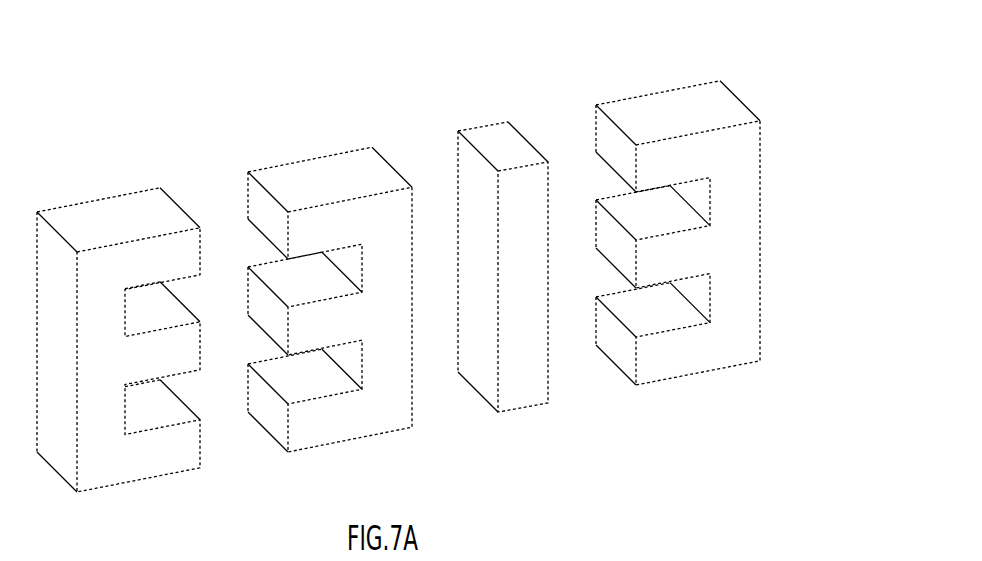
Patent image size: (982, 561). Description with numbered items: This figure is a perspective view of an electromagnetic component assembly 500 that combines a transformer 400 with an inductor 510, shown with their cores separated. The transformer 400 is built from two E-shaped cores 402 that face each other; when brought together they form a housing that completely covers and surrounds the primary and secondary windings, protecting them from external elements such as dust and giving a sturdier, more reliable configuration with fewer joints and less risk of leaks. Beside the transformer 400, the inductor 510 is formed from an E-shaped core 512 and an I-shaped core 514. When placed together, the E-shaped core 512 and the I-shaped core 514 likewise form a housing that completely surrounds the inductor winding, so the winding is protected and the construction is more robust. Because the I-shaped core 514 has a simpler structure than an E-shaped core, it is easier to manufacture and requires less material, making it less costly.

The electromagnetic component assembly 500 is at (104, 99).
The transformer 400 is at (252, 476).
The E-shaped cores 402 is at (112, 195).
The inductor 510 is at (558, 83).
The E-shaped core 512 is at (707, 393).
The I-shaped core 514 is at (533, 428).